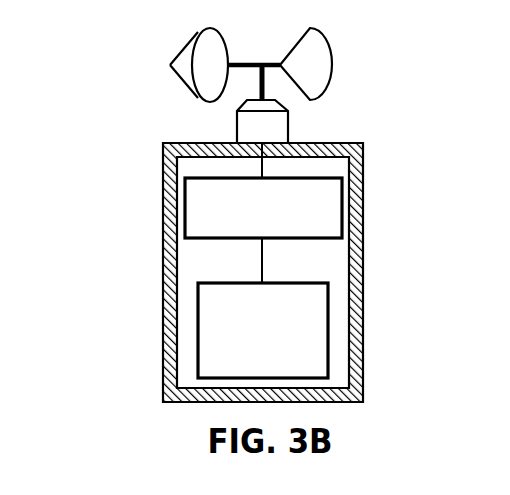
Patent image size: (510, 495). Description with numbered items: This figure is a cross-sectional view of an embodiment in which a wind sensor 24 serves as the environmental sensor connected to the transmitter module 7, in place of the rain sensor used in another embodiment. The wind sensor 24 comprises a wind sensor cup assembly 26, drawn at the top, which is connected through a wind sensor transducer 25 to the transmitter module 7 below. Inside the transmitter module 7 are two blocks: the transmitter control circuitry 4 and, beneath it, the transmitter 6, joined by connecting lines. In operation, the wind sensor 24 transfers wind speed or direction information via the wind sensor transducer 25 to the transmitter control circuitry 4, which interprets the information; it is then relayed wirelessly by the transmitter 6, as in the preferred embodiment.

The transmitter control circuitry 4 is at (341, 191).
The transmitter 6 is at (328, 352).
The transmitter module 7 is at (386, 251).
The wind sensor 24 is at (151, 111).
The wind sensor transducer 25 is at (278, 132).
The wind sensor cup assembly 26 is at (212, 50).